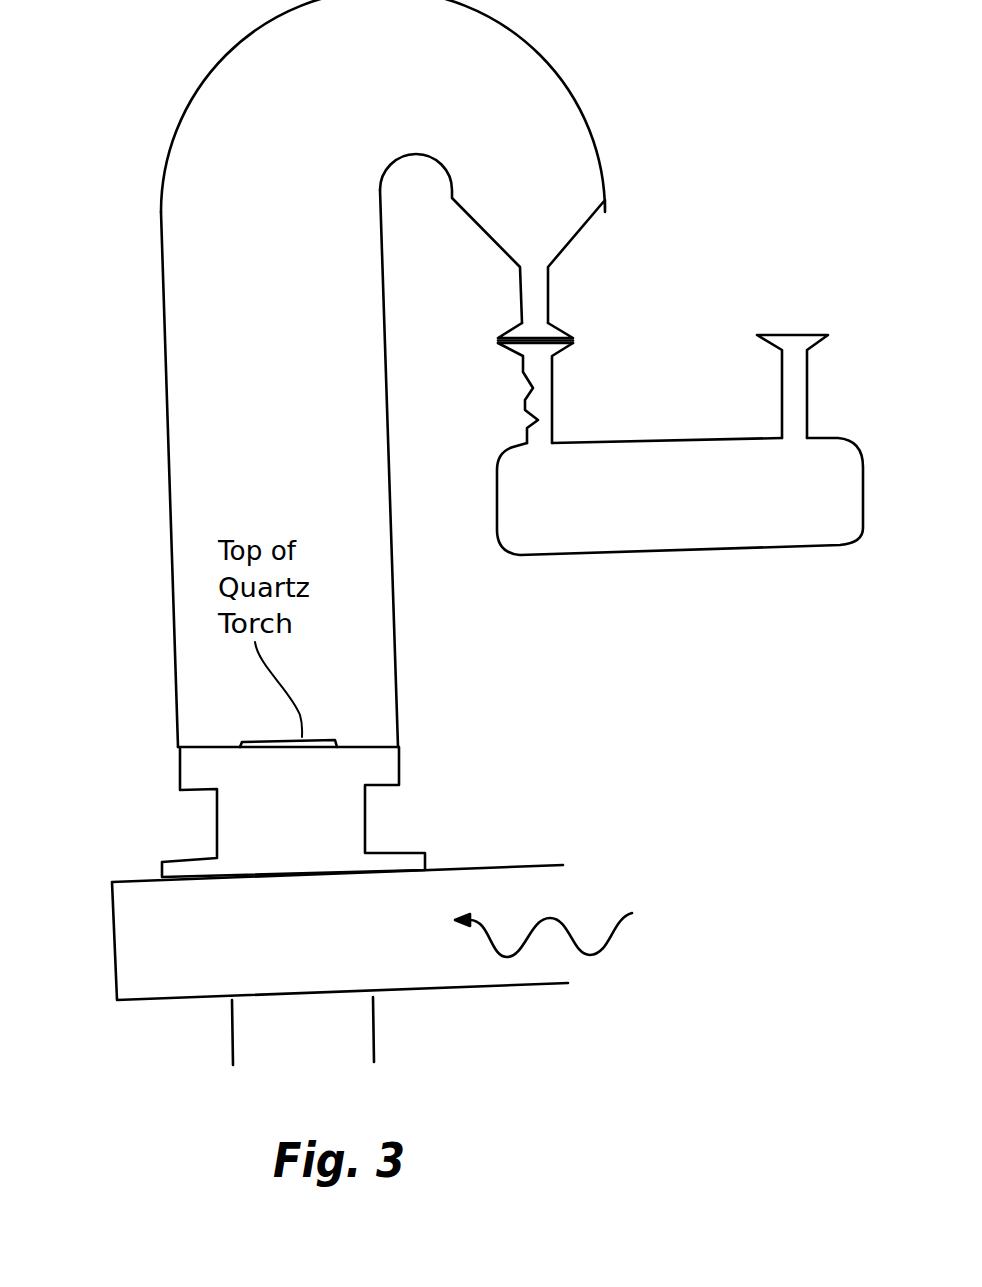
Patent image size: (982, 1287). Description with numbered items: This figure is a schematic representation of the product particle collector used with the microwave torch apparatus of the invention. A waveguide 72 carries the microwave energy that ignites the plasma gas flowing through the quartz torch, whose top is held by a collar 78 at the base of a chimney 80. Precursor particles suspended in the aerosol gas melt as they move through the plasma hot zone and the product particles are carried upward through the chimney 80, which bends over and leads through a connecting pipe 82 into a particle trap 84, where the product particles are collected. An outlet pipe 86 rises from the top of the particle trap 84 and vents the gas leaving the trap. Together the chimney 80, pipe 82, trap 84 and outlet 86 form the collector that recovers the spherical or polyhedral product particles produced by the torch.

The waveguide 72 is at (547, 988).
The collar 78 is at (403, 760).
The chimney 80 is at (164, 422).
The ball joint connecting pipe 82 is at (551, 292).
The particle trap 84 is at (828, 548).
The outlet pipe of particle trap 86 is at (775, 372).